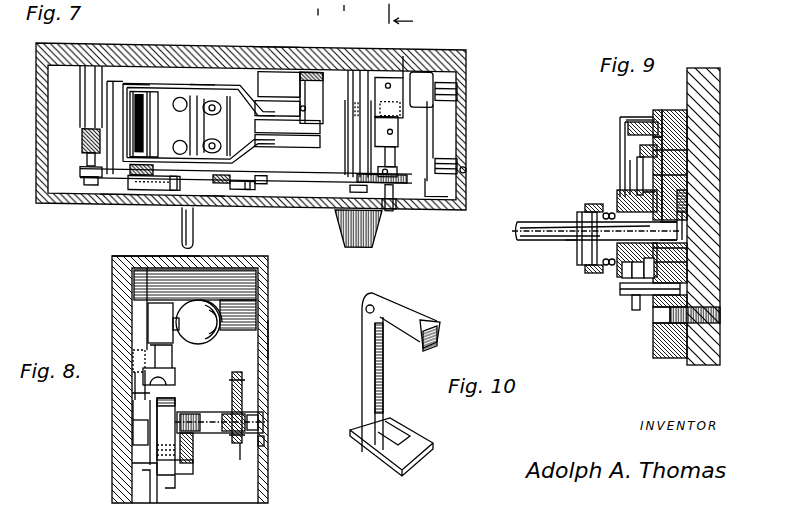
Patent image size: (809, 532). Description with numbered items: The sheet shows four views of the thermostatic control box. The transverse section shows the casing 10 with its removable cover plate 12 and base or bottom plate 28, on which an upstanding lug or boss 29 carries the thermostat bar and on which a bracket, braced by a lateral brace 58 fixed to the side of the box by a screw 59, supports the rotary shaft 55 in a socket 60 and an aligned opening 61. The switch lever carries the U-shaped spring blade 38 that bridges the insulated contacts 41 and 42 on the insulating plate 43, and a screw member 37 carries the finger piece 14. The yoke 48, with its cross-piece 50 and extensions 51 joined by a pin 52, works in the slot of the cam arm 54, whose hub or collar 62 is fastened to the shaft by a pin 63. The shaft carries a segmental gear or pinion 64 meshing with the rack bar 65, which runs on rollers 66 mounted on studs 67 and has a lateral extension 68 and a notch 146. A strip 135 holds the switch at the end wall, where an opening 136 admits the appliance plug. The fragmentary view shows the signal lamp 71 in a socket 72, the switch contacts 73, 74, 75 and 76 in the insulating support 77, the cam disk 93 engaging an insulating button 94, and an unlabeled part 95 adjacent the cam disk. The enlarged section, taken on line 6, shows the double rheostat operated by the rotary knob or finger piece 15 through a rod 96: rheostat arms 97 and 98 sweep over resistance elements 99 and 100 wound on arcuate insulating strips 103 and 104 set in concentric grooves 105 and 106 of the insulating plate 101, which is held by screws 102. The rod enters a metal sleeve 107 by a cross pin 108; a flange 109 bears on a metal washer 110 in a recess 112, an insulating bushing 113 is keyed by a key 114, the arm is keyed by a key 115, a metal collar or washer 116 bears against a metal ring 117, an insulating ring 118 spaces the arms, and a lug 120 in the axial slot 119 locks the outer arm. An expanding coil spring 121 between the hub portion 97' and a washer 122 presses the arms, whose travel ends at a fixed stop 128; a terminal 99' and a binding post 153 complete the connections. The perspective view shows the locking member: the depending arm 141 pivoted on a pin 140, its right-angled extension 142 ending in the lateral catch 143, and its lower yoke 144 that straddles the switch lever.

In FIG. 7, the section line 6 is at (409, 13).
In FIG. 7, the casing 10 is at (463, 72).
In FIG. 8, the casing 10 is at (250, 292).
In FIG. 7, the cover plate 12 is at (92, 207).
In FIG. 8, the cover plate 12 is at (265, 338).
In FIG. 7, the finger piece 14 is at (194, 228).
In FIG. 7, the finger piece 15 is at (351, 244).
In FIG. 7, the base or bottom plate 28 is at (270, 57).
In FIG. 8, the base or bottom plate 28 is at (112, 291).
In FIG. 9, the base or bottom plate 28 is at (713, 118).
In FIG. 7, the upstanding lug or boss 29 is at (310, 68).
In FIG. 7, the screw member 37 is at (213, 200).
In FIG. 7, the U-shaped spring blade 38 is at (130, 98).
In FIG. 7, the insulated contact 41 is at (180, 118).
In FIG. 7, the insulated contact 42 is at (178, 97).
In FIG. 7, the insulating plate 43 is at (195, 100).
In FIG. 7, the yoke 48 is at (133, 92).
In FIG. 7, the cross-piece 50 is at (112, 110).
In FIG. 7, the extensions 51 is at (262, 106).
In FIG. 7, the pin 52 is at (308, 145).
In FIG. 7, the cam arm 54 is at (343, 123).
In FIG. 8, the cam arm 54 is at (195, 460).
In FIG. 7, the rotary shaft 55 is at (398, 164).
In FIG. 8, the rotary shaft 55 is at (215, 431).
In FIG. 7, the lateral brace 58 is at (452, 157).
In FIG. 7, the screw 59 is at (470, 164).
In FIG. 7, the socket 60 is at (405, 50).
In FIG. 8, the socket 60 is at (127, 433).
In FIG. 7, the aligned opening 61 is at (392, 193).
In FIG. 8, the aligned opening 61 is at (250, 418).
In FIG. 7, the hub or collar 62 is at (398, 137).
In FIG. 7, the pin 63 is at (394, 125).
In FIG. 7, the segmental gear or pinion 64 is at (415, 186).
In FIG. 8, the segmental gear or pinion 64 is at (240, 440).
In FIG. 7, the rack bar 65 is at (318, 180).
In FIG. 8, the rack bar 65 is at (243, 380).
In FIG. 7, the rollers 66 is at (82, 177).
In FIG. 8, the rollers 66 is at (262, 442).
In FIG. 7, the pins or studs 67 is at (89, 84).
In FIG. 7, the lateral extension 68 is at (264, 181).
In FIG. 8, the signal lamp 71 is at (212, 335).
In FIG. 8, the sockets 72 is at (160, 320).
In FIG. 8, the switch contact 73 is at (187, 473).
In FIG. 8, the switch contact 74 is at (170, 485).
In FIG. 8, the switch contact 75 is at (167, 380).
In FIG. 7, the switch contact 76 is at (414, 95).
In FIG. 8, the switch contact 76 is at (163, 367).
In FIG. 7, the insulating support 77 is at (450, 78).
In FIG. 8, the insulating support 77 is at (140, 376).
In FIG. 7, the cam disk 93 is at (386, 77).
In FIG. 8, the cam disk 93 is at (157, 448).
In FIG. 8, the insulating projection or button 94 is at (145, 397).
In FIG. 8, the gear 95 is at (172, 400).
In FIG. 9, the rod 96 is at (554, 223).
In FIG. 9, the rheostat arm 97 is at (614, 157).
In FIG. 9, the hub portion 97' is at (611, 322).
In FIG. 9, the rheostat arm 98 is at (633, 177).
In FIG. 9, the resistance element 99 is at (638, 100).
In FIG. 7, the terminal 99' is at (306, 8).
In FIG. 9, the resistance element 100 is at (670, 176).
In FIG. 9, the insulating plate 101 is at (670, 110).
In FIG. 7, the screws 102 is at (373, 13).
In FIG. 9, the screws 102 is at (720, 316).
In FIG. 9, the arcuate insulating strip 103 is at (628, 128).
In FIG. 9, the arcuate insulating strip 104 is at (668, 153).
In FIG. 9, the concentric groove 105 is at (656, 110).
In FIG. 9, the concentric groove 106 is at (660, 150).
In FIG. 9, the metal sleeve 107 is at (688, 248).
In FIG. 9, the cross pin 108 is at (592, 258).
In FIG. 9, the flange 109 is at (688, 206).
In FIG. 9, the metal washer 110 is at (688, 262).
In FIG. 9, the recess 112 is at (688, 216).
In FIG. 9, the insulating bushing 113 is at (620, 270).
In FIG. 9, the key 114 is at (686, 230).
In FIG. 9, the key 115 is at (648, 266).
In FIG. 9, the metal collar or washer 116 is at (637, 171).
In FIG. 9, the metal ring 117 is at (685, 189).
In FIG. 9, the insulating ring or collar 118 is at (645, 268).
In FIG. 9, the axial slot or groove 119 is at (565, 240).
In FIG. 9, the lug or projection 120 is at (578, 242).
In FIG. 9, the expanding coil spring 121 is at (606, 206).
In FIG. 9, the washer 122 is at (608, 270).
In FIG. 9, the fixed stop 128 is at (680, 289).
In FIG. 7, the strip 135 is at (125, 84).
In FIG. 7, the opening 136 is at (210, 84).
In FIG. 7, the pin 140 is at (140, 187).
In FIG. 10, the depending arm 141 is at (370, 360).
In FIG. 7, the right-angled extension 142 is at (153, 189).
In FIG. 10, the right-angled extension 142 is at (396, 313).
In FIG. 7, the lateral catch 143 is at (213, 182).
In FIG. 10, the lateral catch 143 is at (437, 322).
In FIG. 10, the yoke 144 is at (395, 418).
In FIG. 7, the notch 146 is at (177, 184).
In FIG. 7, the binding post 153 is at (337, 12).